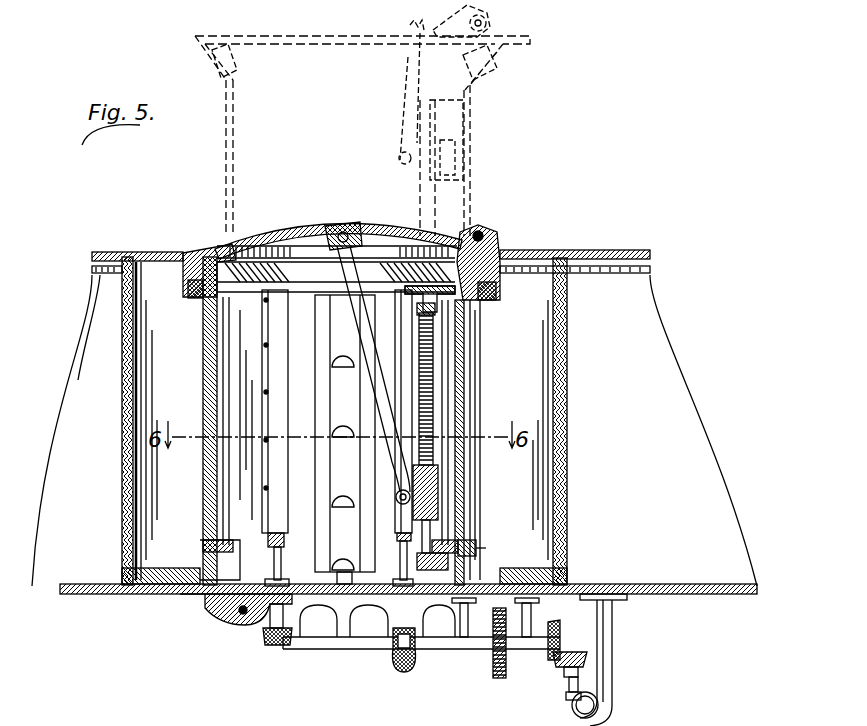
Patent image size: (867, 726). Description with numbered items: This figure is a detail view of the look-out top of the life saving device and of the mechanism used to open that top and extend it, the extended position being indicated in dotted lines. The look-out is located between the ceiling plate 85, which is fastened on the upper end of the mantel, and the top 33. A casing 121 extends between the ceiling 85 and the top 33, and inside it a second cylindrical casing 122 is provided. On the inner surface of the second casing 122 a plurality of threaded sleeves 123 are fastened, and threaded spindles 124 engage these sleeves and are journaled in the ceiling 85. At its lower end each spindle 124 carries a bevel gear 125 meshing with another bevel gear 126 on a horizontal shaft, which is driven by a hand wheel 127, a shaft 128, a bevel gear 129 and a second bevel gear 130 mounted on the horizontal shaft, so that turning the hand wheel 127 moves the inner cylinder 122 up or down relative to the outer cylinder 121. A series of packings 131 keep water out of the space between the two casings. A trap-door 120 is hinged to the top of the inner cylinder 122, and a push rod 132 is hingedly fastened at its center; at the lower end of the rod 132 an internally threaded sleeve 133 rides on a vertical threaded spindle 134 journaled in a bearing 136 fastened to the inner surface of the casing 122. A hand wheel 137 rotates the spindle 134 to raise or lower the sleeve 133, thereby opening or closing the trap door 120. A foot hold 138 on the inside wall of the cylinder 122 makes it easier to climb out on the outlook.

The top 33 is at (96, 253).
The plate 85 is at (693, 596).
The trap-door 120 is at (497, 12).
The casing 121 is at (208, 476).
The second cylindrical casing 122 is at (224, 171).
The threaded sleeves 123 is at (276, 488).
The threaded spindles 124 is at (237, 601).
The bevel gear 125 is at (271, 638).
The bevel gear 126 is at (295, 652).
The hand wheel 127 is at (627, 663).
The shaft 128 is at (567, 707).
The bevel gear 129 is at (584, 650).
The second bevel gear 130 is at (506, 655).
The packings 131 is at (202, 302).
The push rod 132 is at (406, 98).
The internally threaded sleeve 133 is at (462, 135).
The threaded spindle 134 is at (410, 408).
The bearing 136 is at (468, 551).
The hand wheel 137 is at (413, 290).
The foot hold 138 is at (347, 504).